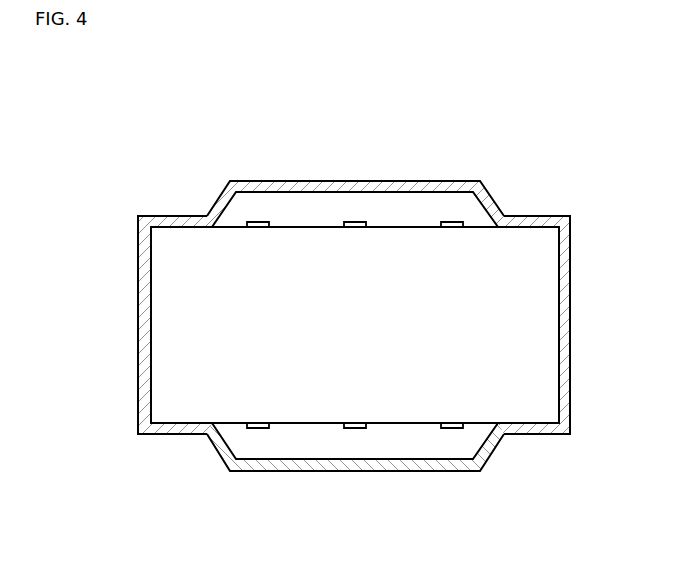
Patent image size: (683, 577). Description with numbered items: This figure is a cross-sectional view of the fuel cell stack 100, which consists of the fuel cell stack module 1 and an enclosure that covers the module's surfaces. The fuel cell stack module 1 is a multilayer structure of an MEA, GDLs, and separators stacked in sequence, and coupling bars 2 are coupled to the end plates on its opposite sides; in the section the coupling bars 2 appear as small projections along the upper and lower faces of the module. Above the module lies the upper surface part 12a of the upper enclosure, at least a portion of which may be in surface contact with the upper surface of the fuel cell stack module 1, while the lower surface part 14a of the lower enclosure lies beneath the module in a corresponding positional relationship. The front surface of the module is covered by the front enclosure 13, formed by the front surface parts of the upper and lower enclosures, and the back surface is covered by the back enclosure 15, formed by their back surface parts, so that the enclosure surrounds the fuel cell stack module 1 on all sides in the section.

The fuel cell stack 100 is at (229, 94).
The fuel cell stack module 1 is at (518, 357).
The coupling bars 2 is at (455, 220).
The upper surface part 12a is at (367, 187).
The front enclosure 13 is at (146, 318).
The lower surface part 14a is at (393, 465).
The back enclosure 15 is at (571, 302).